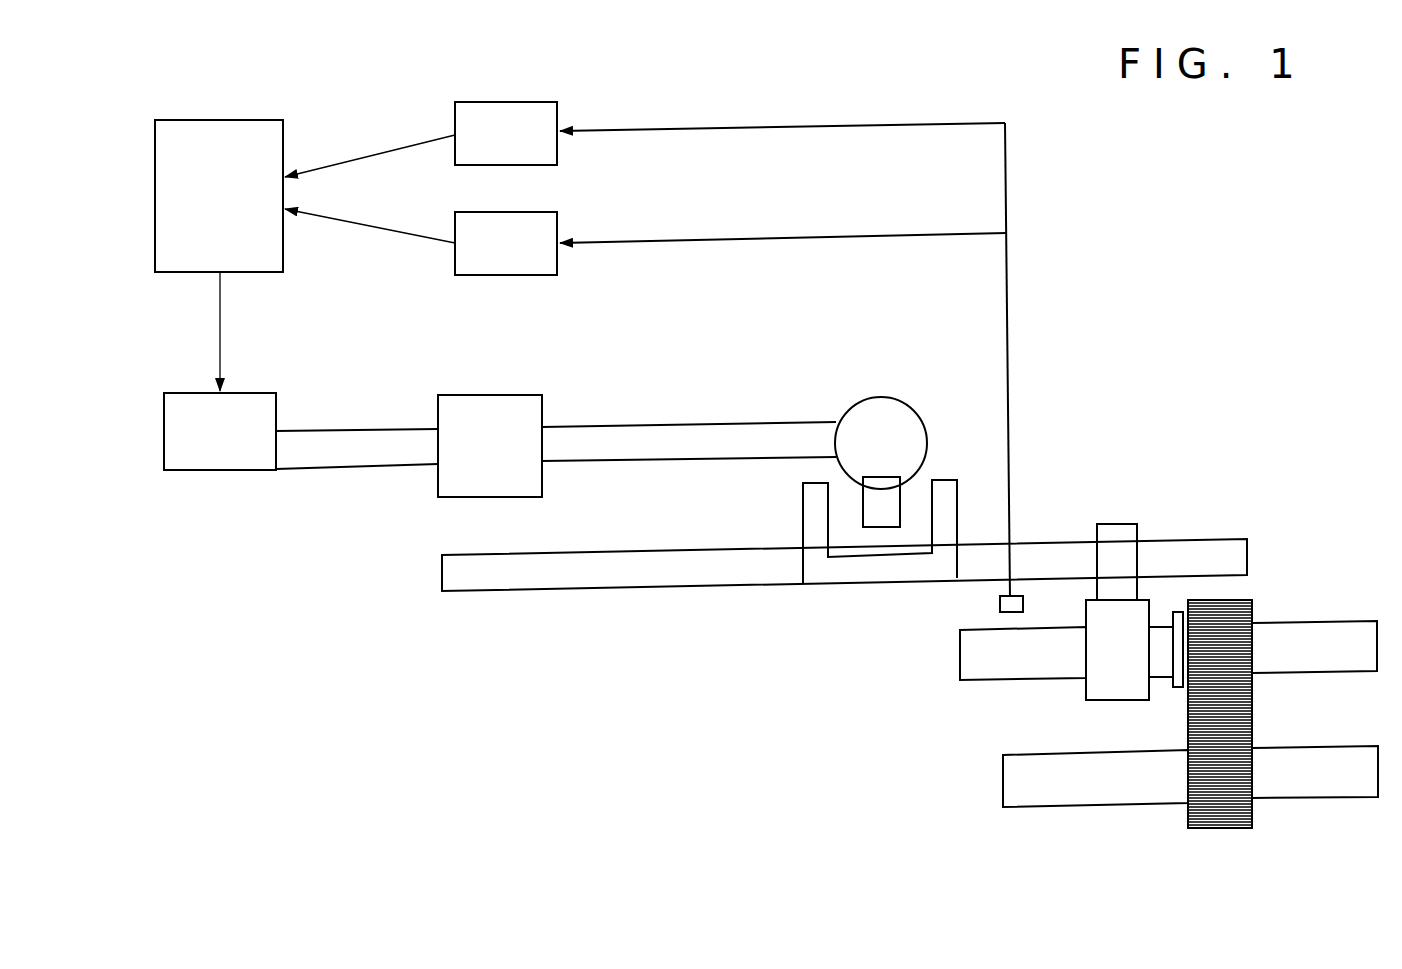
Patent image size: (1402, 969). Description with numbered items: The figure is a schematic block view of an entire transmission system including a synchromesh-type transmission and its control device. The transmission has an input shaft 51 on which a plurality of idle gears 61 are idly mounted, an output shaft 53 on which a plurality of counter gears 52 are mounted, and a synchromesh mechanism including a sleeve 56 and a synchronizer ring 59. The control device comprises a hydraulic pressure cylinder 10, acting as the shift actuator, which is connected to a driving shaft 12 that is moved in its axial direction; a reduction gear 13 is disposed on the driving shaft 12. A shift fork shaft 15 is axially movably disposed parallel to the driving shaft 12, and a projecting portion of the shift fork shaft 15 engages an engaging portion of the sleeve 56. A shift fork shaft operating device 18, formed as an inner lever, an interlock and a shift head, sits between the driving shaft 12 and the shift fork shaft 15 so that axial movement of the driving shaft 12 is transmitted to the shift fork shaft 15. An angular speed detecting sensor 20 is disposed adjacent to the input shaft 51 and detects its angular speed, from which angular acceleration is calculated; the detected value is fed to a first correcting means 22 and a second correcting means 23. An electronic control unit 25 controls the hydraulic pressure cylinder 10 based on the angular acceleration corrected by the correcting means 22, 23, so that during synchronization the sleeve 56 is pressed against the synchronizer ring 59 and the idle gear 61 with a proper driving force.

The hydraulic pressure cylinder 10 is at (199, 446).
The driving shaft 12 is at (313, 450).
The reduction gear 13 is at (469, 459).
The shift fork shaft 15 is at (712, 610).
The shift fork shaft operating device 18 is at (848, 370).
The angular speed detecting sensor 20 is at (1020, 596).
The first correcting means 22 is at (486, 147).
The second correcting means 23 is at (486, 259).
The electronic control unit 25 is at (198, 209).
The input shaft 51 is at (975, 664).
The counter gear 52 is at (1237, 803).
The output shaft 53 is at (1013, 794).
The sleeve 56 is at (1107, 668).
The synchronizer ring 59 is at (1178, 612).
The idle gear 61 is at (1232, 615).